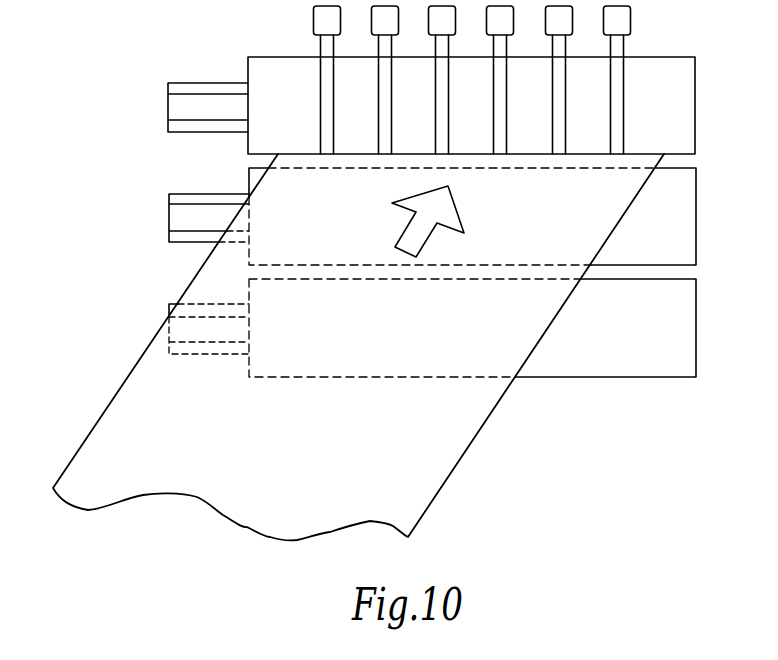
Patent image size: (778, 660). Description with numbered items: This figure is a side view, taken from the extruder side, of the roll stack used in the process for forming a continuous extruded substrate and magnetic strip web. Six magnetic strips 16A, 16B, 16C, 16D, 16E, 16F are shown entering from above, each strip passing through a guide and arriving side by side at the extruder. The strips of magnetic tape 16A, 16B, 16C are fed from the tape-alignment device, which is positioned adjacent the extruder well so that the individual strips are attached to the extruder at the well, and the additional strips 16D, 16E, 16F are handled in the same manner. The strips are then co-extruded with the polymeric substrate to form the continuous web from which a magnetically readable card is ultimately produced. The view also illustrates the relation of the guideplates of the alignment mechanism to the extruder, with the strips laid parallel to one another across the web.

The magnetic strip 16A is at (624, 105).
The magnetic strip 16B is at (566, 105).
The magnetic strip 16C is at (507, 105).
The tap 16D is at (449, 105).
The tap 16E is at (392, 105).
The tap 16F is at (334, 105).